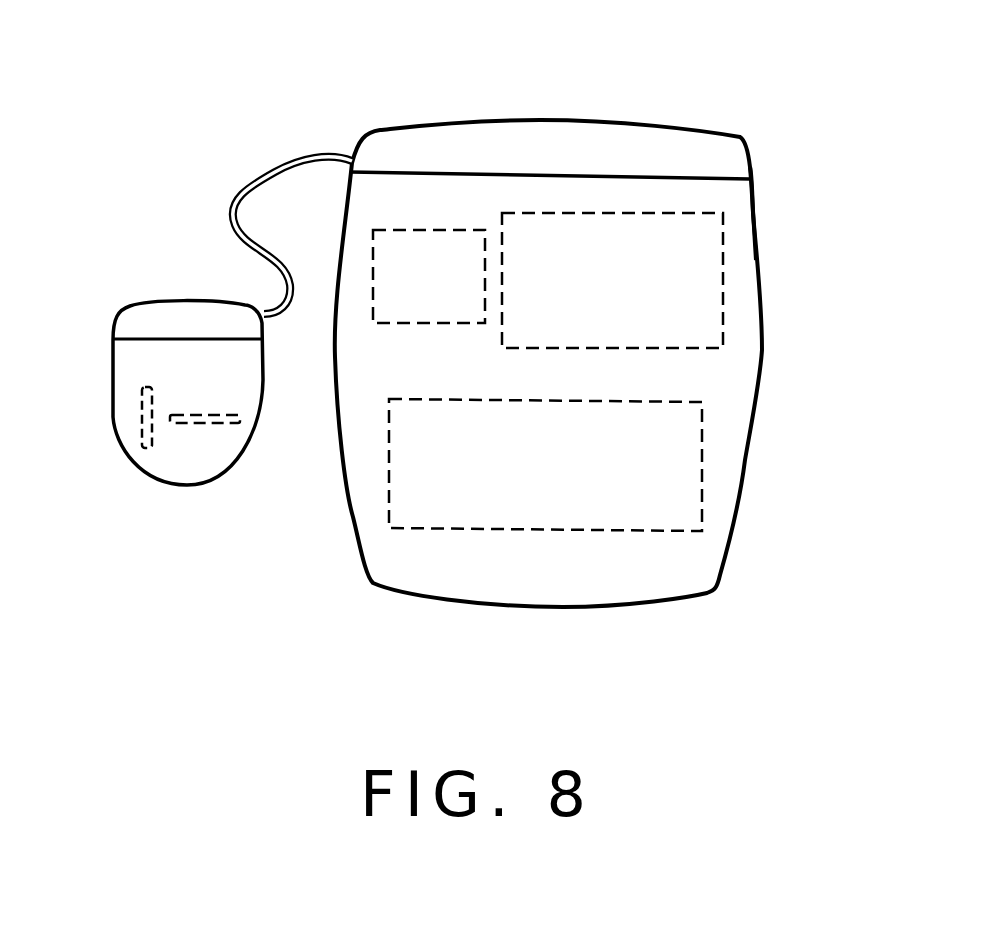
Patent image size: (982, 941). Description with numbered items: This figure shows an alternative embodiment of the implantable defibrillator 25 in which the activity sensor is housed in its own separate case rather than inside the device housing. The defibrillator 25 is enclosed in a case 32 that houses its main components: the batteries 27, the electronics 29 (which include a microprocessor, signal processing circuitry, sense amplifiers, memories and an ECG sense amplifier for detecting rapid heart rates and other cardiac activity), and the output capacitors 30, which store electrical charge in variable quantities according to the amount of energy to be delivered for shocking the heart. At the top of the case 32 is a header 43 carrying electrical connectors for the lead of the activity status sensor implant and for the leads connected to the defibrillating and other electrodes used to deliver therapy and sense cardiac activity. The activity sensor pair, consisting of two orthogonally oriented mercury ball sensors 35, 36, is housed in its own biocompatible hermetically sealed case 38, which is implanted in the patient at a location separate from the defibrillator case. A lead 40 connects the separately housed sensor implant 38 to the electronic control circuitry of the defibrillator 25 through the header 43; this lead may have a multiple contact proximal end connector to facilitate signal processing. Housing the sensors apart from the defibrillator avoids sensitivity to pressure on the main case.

The defibrillator 25 is at (388, 96).
The batteries 27 is at (417, 513).
The electronics 29 is at (723, 259).
The output capacitors 30 is at (380, 307).
The case 32 is at (753, 195).
The mercury ball sensor 35 is at (142, 418).
The mercury ball sensor 36 is at (207, 423).
The sensor case 38 is at (112, 343).
The lead 40 is at (290, 162).
The header 43 is at (540, 120).